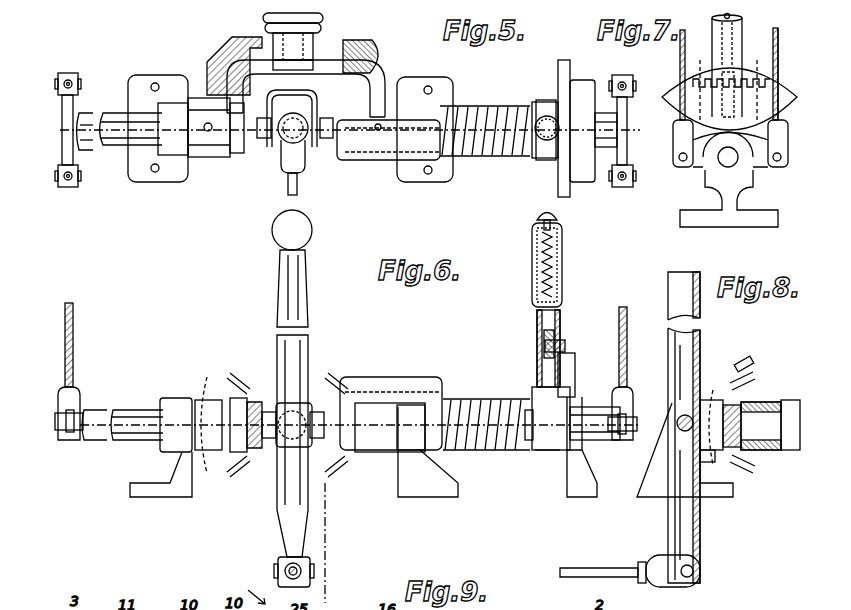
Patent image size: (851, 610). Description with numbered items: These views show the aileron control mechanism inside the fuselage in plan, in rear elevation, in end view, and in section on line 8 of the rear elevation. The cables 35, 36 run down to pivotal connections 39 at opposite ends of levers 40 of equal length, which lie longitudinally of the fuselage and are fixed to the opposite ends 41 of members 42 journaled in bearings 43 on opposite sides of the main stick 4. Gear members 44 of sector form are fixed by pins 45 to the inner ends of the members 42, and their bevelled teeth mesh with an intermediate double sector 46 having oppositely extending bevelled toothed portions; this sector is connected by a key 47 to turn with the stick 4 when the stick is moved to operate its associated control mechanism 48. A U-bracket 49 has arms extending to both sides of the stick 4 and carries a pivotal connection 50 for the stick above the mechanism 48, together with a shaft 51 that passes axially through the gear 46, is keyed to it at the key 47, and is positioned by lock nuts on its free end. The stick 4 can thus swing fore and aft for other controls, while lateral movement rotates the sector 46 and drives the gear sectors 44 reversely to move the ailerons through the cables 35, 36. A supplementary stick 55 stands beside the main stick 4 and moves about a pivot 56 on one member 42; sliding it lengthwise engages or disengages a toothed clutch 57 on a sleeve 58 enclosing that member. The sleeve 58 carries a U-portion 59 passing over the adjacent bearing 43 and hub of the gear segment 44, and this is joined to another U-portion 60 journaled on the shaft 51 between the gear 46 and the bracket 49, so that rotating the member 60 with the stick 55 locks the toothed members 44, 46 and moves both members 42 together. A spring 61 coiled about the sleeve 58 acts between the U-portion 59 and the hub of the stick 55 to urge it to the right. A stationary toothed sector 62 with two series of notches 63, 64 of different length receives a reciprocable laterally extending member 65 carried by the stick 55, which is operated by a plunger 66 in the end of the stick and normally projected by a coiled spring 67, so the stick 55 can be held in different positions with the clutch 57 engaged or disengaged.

In FIG. 5, the stick 4 is at (299, 140).
In FIG. 6, the stick 4 is at (292, 383).
In FIG. 8, the stick 4 is at (701, 347).
In FIG. 6, the section line 8— 8 is at (314, 266).
In FIG. 5, the cable 35 is at (69, 79).
In FIG. 7, the cable 35 is at (778, 62).
In FIG. 5, the cable 36 is at (68, 188).
In FIG. 7, the cable 36 is at (683, 60).
In FIG. 6, the cable 36 is at (65, 337).
In FIG. 5, the pivotal connection 39 is at (58, 84).
In FIG. 7, the pivotal connection 39 is at (679, 157).
In FIG. 6, the pivotal connection 39 is at (58, 432).
In FIG. 5, the lever 40 is at (62, 150).
In FIG. 7, the lever 40 is at (712, 166).
In FIG. 6, the lever 40 is at (70, 445).
In FIG. 7, the end of member 41 is at (727, 162).
In FIG. 5, the member 42 is at (112, 113).
In FIG. 6, the member 42 is at (133, 410).
In FIG. 5, the bearing 43 is at (170, 103).
In FIG. 6, the bearing 43 is at (178, 398).
In FIG. 8, the bearing 43 is at (672, 430).
In FIG. 5, the gear member of sector form 44 is at (215, 98).
In FIG. 6, the gear member of sector form 44 is at (212, 400).
In FIG. 8, the gear member of sector form 44 is at (732, 405).
In FIG. 5, the pin 45 is at (208, 131).
In FIG. 5, the intermediate double sector 46 is at (238, 37).
In FIG. 6, the intermediate double sector 46 is at (255, 402).
In FIG. 8, the intermediate double sector 46 is at (762, 402).
In FIG. 5, the key 47 is at (270, 33).
In FIG. 5, the control mechanism 48 is at (297, 190).
In FIG. 6, the control mechanism 48 is at (305, 565).
In FIG. 8, the control mechanism 48 is at (638, 562).
In FIG. 5, the U-bracket 49 is at (270, 105).
In FIG. 6, the U-bracket 49 is at (306, 405).
In FIG. 8, the U-bracket 49 is at (708, 405).
In FIG. 5, the pivotal connection 50 is at (262, 138).
In FIG. 6, the pivotal connection 50 is at (266, 440).
In FIG. 8, the pivotal connection 50 is at (678, 440).
In FIG. 5, the shaft 51 is at (320, 45).
In FIG. 6, the shaft 51 is at (280, 470).
In FIG. 8, the shaft 51 is at (755, 470).
In FIG. 5, the supplementary stick 55 is at (546, 100).
In FIG. 7, the supplementary stick 55 is at (742, 40).
In FIG. 6, the supplementary stick 55 is at (562, 265).
In FIG. 6, the pivot 56 is at (532, 457).
In FIG. 5, the toothed clutch 57 is at (535, 108).
In FIG. 6, the toothed clutch 57 is at (527, 412).
In FIG. 5, the sleeve 58 is at (485, 106).
In FIG. 6, the sleeve 58 is at (480, 400).
In FIG. 5, the U-portion 59 is at (388, 160).
In FIG. 6, the U-portion 59 is at (388, 377).
In FIG. 5, the U-portion 60 is at (345, 76).
In FIG. 6, the U-portion 60 is at (320, 455).
In FIG. 8, the U-portion 60 is at (713, 470).
In FIG. 5, the spring 61 is at (492, 157).
In FIG. 6, the spring 61 is at (452, 400).
In FIG. 5, the stationary toothed sector 62 is at (566, 165).
In FIG. 7, the stationary toothed sector 62 is at (676, 132).
In FIG. 6, the stationary toothed sector 62 is at (566, 370).
In FIG. 7, the notches 63 is at (703, 70).
In FIG. 6, the notches 63 is at (558, 340).
In FIG. 7, the notches 64 is at (715, 80).
In FIG. 6, the notches 64 is at (562, 345).
In FIG. 5, the reciprocable laterally extending member 65 is at (585, 150).
In FIG. 7, the reciprocable laterally extending member 65 is at (722, 95).
In FIG. 6, the reciprocable laterally extending member 65 is at (565, 348).
In FIG. 5, the plunger 66 is at (545, 140).
In FIG. 7, the plunger 66 is at (730, 16).
In FIG. 6, the plunger 66 is at (537, 218).
In FIG. 6, the coiled spring 67 is at (532, 265).